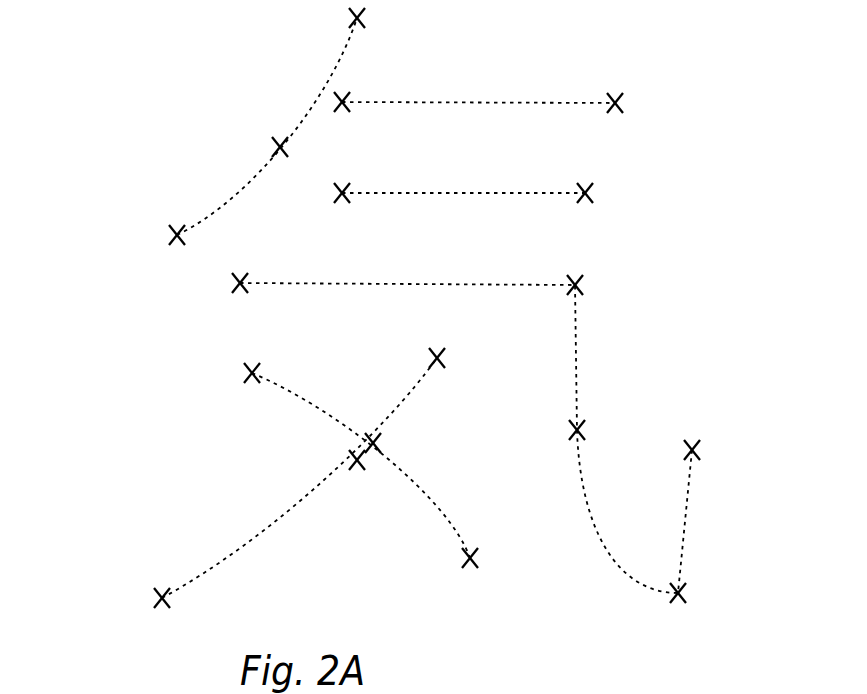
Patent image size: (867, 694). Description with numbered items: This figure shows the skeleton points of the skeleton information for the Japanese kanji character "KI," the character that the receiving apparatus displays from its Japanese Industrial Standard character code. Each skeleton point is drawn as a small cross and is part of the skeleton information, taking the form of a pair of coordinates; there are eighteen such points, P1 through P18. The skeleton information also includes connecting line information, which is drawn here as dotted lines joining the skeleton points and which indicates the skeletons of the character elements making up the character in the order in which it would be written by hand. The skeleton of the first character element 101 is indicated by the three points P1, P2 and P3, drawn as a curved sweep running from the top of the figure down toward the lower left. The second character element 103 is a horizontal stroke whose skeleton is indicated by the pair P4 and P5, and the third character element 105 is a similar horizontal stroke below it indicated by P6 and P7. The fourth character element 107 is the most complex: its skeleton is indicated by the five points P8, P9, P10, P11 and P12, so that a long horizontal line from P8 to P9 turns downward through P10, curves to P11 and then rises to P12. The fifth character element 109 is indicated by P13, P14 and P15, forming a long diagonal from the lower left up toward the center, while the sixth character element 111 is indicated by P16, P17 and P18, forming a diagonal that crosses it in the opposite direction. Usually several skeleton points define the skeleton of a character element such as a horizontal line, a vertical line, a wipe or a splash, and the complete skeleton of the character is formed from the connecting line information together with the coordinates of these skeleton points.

The skeleton point P1 is at (348, 19).
The skeleton point P2 is at (280, 143).
The skeleton point P3 is at (177, 233).
The skeleton point P4 is at (340, 98).
The skeleton point P5 is at (620, 99).
The skeleton point P6 is at (342, 190).
The skeleton point P7 is at (590, 190).
The skeleton point P8 is at (240, 290).
The skeleton point P9 is at (581, 284).
The skeleton point P10 is at (575, 428).
The skeleton point P11 is at (685, 591).
The skeleton point P12 is at (698, 448).
The skeleton point P13 is at (437, 355).
The skeleton point P14 is at (350, 468).
The skeleton point P15 is at (157, 598).
The skeleton point P16 is at (245, 373).
The skeleton point P17 is at (378, 436).
The skeleton point P18 is at (472, 566).
The character element 101 is at (238, 188).
The character element 103 is at (494, 102).
The character element 105 is at (458, 193).
The character element 107 is at (417, 284).
The character element 109 is at (260, 542).
The character element 111 is at (322, 405).